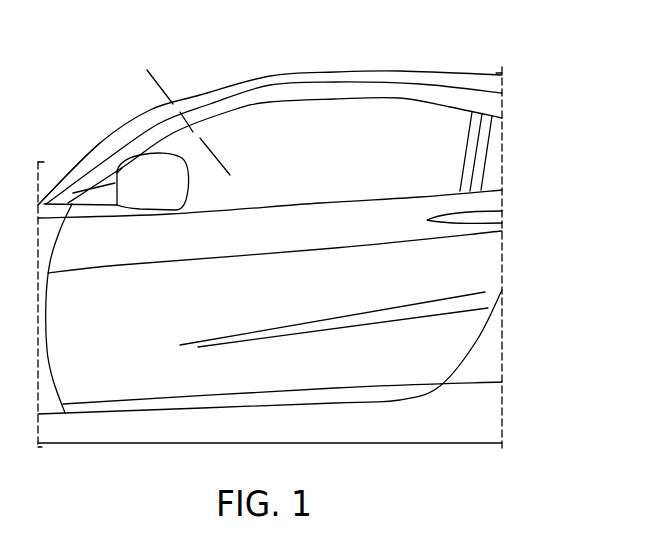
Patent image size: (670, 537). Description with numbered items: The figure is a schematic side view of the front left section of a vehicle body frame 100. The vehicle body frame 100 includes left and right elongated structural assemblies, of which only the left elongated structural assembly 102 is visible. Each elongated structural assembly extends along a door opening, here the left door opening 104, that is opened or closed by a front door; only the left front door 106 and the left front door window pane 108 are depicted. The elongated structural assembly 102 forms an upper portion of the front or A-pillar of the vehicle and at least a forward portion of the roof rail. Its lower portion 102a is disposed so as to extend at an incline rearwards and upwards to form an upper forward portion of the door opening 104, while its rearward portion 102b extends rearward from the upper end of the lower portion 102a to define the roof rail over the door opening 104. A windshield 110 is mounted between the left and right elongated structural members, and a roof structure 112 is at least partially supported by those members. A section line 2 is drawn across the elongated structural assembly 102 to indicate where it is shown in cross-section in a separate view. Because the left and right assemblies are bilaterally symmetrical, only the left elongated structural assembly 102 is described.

The vehicle body frame 100 is at (479, 52).
The left elongated structural assembly 102 is at (270, 106).
The lower portion of the elongated structural assembly 102a is at (121, 157).
The rearward portion of the elongated structural assembly 102b is at (353, 90).
The left door opening 104 is at (325, 117).
The left front door 106 is at (491, 262).
The left front door window pane 108 is at (297, 190).
The windshield 110 is at (60, 172).
The roof structure 112 is at (448, 80).
The section line 2- 2 is at (152, 71).